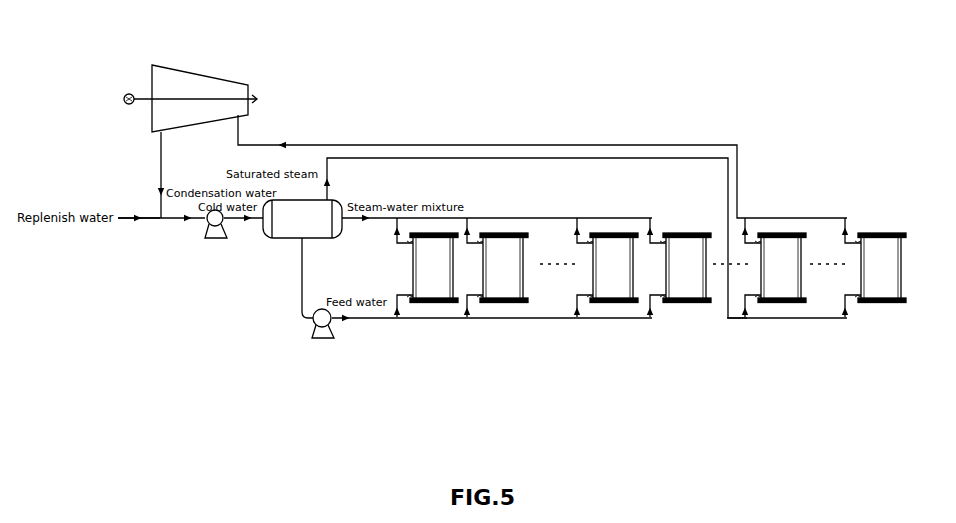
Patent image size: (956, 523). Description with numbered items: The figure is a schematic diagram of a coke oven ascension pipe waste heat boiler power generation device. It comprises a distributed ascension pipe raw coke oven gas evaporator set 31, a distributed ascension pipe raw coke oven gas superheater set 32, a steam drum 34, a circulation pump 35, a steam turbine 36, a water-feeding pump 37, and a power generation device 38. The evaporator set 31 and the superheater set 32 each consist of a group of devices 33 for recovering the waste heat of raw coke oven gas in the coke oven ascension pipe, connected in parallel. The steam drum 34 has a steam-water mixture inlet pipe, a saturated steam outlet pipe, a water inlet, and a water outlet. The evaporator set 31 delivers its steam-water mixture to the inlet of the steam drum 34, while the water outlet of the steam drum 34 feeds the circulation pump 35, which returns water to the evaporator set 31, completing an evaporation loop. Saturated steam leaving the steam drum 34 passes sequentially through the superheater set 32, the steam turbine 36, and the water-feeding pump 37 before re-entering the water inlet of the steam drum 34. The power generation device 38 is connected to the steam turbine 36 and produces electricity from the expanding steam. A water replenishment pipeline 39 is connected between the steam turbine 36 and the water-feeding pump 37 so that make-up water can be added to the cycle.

The distributed ascension pipe raw coke oven gas evaporator set 31 is at (548, 233).
The distributed ascension pipe raw coke oven gas superheater set 32 is at (825, 242).
The device for recovering the waste heat of raw coke oven gas in the ascension pipe 33 is at (433, 293).
The steam drum 34 is at (305, 218).
The circulation pump 35 is at (318, 338).
The steam turbine 36 is at (203, 93).
The water-feeding pump 37 is at (207, 232).
The power generation device 38 is at (132, 94).
The water replenishment pipeline 39 is at (148, 220).